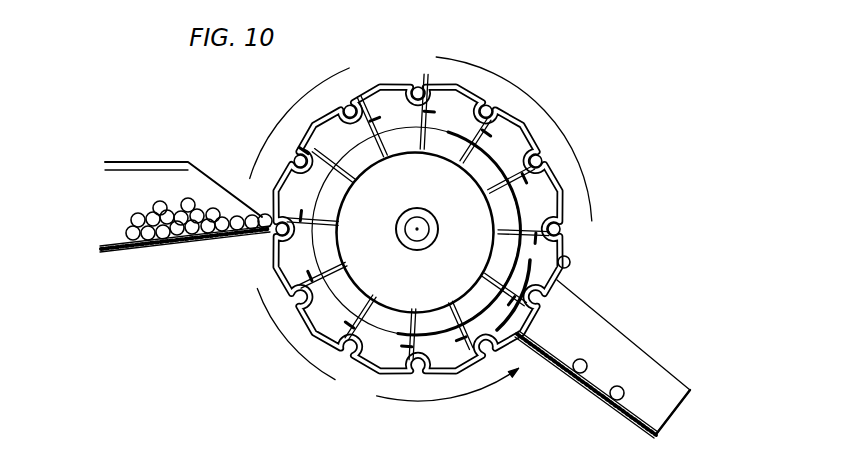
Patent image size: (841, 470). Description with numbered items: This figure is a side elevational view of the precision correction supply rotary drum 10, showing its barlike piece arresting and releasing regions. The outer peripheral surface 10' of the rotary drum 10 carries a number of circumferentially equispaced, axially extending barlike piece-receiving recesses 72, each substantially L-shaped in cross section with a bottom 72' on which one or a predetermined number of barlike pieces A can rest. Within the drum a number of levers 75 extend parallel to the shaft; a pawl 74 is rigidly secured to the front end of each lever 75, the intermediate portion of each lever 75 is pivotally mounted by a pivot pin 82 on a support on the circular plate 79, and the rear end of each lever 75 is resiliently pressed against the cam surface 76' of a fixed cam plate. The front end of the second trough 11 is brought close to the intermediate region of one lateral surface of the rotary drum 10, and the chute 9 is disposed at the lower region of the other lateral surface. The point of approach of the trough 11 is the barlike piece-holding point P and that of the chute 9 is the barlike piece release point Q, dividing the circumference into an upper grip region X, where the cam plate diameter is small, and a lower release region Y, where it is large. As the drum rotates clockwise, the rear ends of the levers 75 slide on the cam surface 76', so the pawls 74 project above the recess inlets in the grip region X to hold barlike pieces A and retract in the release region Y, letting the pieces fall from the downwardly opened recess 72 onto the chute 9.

The rotary drum 10 is at (472, 231).
The outer peripheral surface of the rotary drum 10' is at (255, 139).
The chute 9 is at (585, 391).
The second trough 11 is at (120, 253).
The barlike piece-receiving recess 72 is at (275, 334).
The bottom of recess 72' is at (306, 365).
The pawl 74 is at (428, 76).
The lever 75 is at (347, 166).
The cam surface 76' is at (455, 229).
The circular plate 79 is at (522, 70).
The pivot pin 82 is at (434, 114).
The barlike piece A is at (150, 210).
The barlike piece-holding point P is at (262, 242).
The barlike piece release point Q is at (583, 280).
The grip region X is at (407, 52).
The release region Y is at (300, 350).